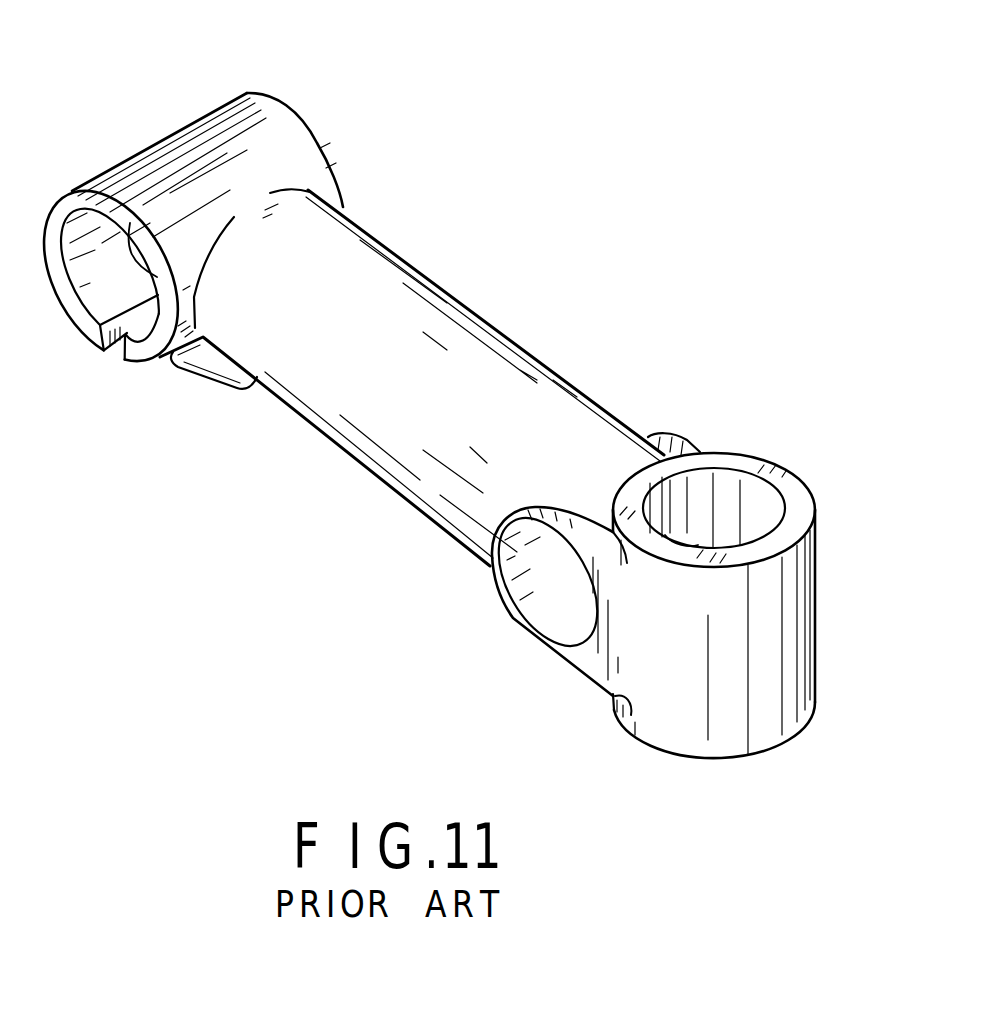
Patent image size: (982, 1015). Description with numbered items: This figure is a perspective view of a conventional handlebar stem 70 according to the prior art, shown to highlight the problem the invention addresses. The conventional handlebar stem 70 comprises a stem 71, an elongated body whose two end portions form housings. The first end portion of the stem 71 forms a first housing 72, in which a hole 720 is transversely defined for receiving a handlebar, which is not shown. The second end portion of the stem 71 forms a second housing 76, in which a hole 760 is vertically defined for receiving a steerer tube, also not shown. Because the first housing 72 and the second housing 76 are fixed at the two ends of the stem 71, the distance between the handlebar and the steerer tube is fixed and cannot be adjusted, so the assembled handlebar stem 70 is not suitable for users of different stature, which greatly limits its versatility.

The conventional handlebar stem 70 is at (461, 394).
The stem 71 is at (325, 407).
The first housing 72 is at (193, 195).
The hole 720 is at (113, 248).
The second housing 76 is at (745, 563).
The hole 760 is at (733, 494).